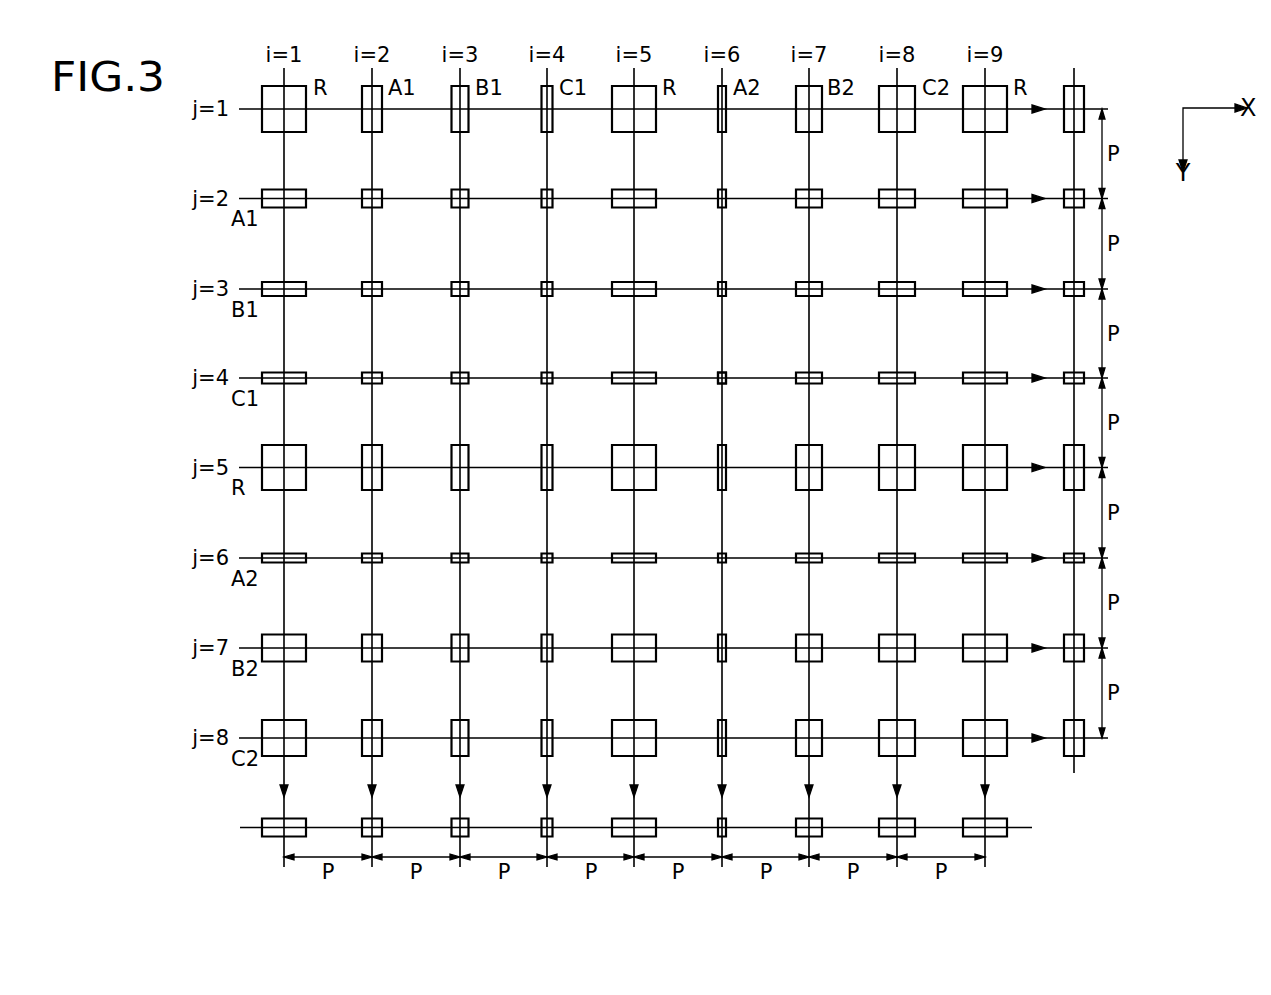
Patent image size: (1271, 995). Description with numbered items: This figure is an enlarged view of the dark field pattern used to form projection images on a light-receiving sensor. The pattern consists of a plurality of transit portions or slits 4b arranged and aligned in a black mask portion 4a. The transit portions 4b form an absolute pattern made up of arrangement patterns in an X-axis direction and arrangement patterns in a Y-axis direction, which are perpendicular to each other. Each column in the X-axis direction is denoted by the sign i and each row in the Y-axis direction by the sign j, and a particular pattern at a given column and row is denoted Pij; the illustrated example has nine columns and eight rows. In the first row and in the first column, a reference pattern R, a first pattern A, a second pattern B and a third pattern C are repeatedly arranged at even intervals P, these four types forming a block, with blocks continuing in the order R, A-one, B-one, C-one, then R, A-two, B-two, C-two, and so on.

The black mask portion 4a is at (1048, 155).
The transit portions 4b is at (261, 87).
The particular pattern Pij is at (718, 373).